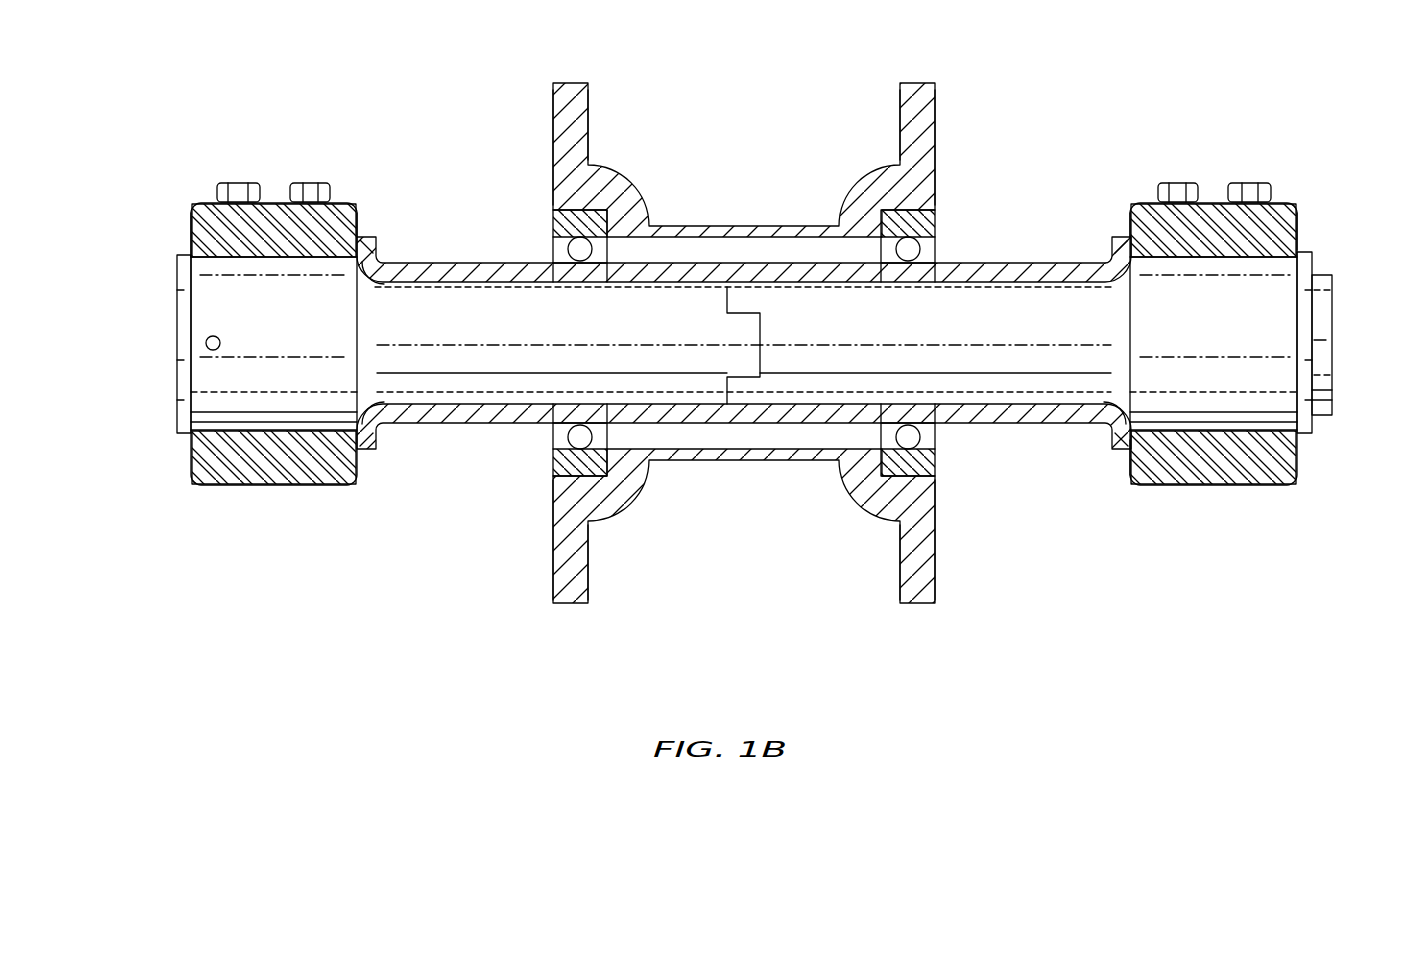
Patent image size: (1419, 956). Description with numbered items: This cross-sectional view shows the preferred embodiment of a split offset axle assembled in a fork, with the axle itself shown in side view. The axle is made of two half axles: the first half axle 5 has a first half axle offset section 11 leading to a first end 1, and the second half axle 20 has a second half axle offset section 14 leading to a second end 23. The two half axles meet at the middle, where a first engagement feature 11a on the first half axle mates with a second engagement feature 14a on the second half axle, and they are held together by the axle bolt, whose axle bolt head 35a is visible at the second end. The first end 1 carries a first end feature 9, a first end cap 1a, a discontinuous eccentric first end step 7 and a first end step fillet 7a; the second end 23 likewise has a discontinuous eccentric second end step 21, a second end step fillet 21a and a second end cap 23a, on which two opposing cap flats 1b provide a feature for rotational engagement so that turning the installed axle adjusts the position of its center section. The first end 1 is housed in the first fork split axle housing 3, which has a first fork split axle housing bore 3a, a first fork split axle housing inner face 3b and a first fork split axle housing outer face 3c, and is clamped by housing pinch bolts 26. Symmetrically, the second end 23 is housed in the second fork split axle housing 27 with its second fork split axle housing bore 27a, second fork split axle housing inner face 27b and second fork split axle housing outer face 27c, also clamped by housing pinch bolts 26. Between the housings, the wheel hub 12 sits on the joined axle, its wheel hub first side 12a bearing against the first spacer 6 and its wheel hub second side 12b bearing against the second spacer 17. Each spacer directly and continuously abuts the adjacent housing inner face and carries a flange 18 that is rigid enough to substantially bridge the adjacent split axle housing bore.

The first end 1 is at (210, 371).
The first end cap 1a is at (173, 262).
The cap flats 1b is at (183, 253).
The first fork split axle housing 3 is at (343, 203).
The first fork split axle housing bore 3a is at (300, 435).
The first fork split axle housing inner face 3b is at (360, 217).
The first fork split axle housing outer face 3c is at (190, 226).
The first half axle 5 is at (455, 303).
The first spacer 6 is at (385, 263).
The discontinuous eccentric first end step 7 is at (362, 365).
The first end step fillet 7a is at (360, 372).
The first end feature 9 is at (205, 343).
The first half axle offset section 11 is at (538, 305).
The first engagement feature 11a is at (760, 347).
The wheel hub 12 is at (612, 192).
The wheel hub first side 12a is at (551, 107).
The wheel hub second side 12b is at (937, 107).
The second half axle offset section 14 is at (960, 315).
The second engagement feature 14a is at (730, 296).
The second spacer 17 is at (1016, 271).
The flange 18 is at (378, 248).
The second half axle 20 is at (1020, 382).
The discontinuous eccentric second end step 21 is at (1083, 408).
The second end step fillet 21a is at (1112, 433).
The second end 23 is at (1231, 413).
The second end cap 23a is at (1303, 328).
The housing pinch bolts 26 is at (312, 183).
The second fork split axle housing 27 is at (1283, 222).
The second fork split axle housing bore 27a is at (1168, 447).
The second fork split axle housing inner face 27b is at (1134, 218).
The second fork split axle housing outer face 27c is at (1298, 226).
The axle bolt head 35a is at (1333, 385).